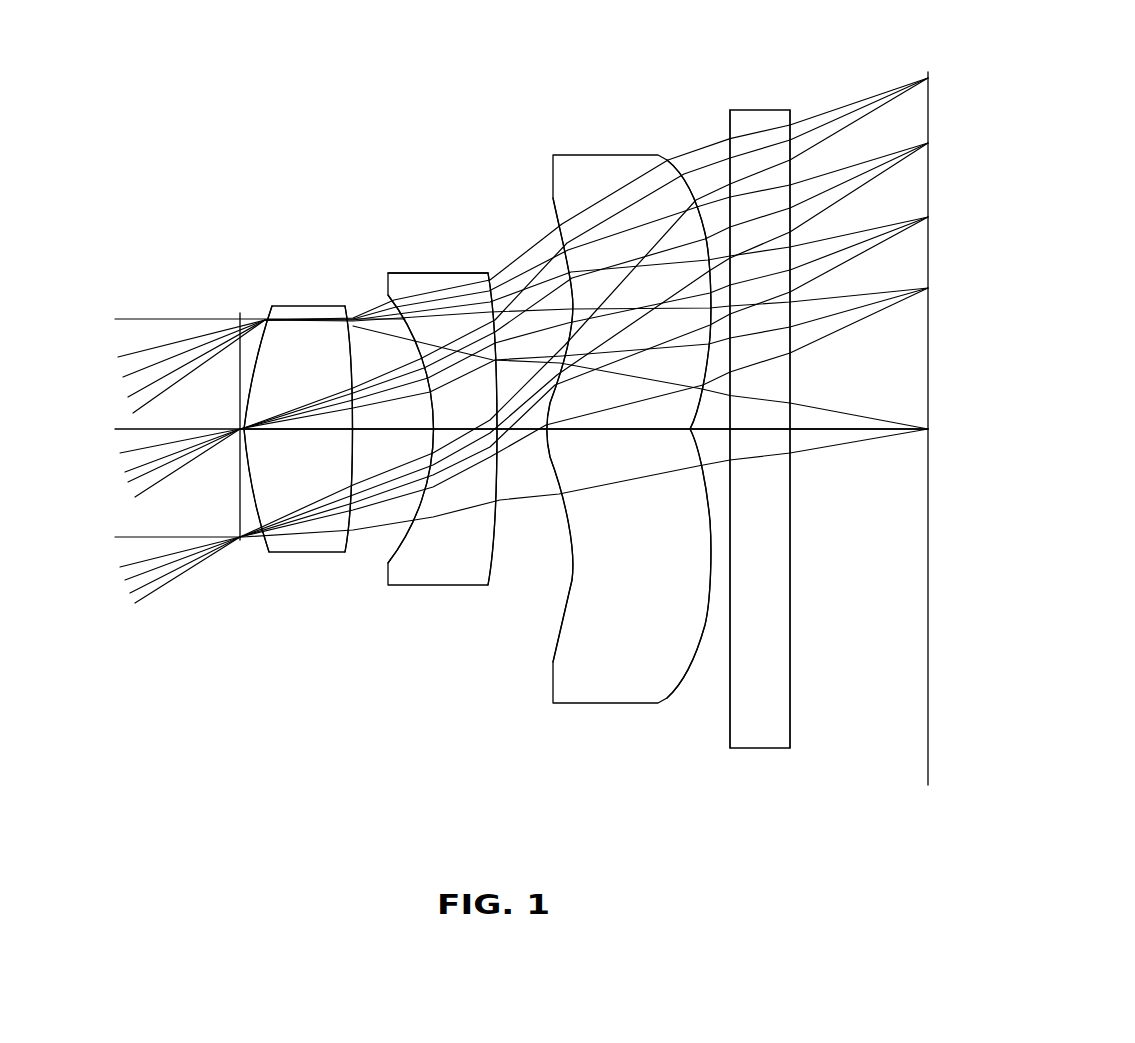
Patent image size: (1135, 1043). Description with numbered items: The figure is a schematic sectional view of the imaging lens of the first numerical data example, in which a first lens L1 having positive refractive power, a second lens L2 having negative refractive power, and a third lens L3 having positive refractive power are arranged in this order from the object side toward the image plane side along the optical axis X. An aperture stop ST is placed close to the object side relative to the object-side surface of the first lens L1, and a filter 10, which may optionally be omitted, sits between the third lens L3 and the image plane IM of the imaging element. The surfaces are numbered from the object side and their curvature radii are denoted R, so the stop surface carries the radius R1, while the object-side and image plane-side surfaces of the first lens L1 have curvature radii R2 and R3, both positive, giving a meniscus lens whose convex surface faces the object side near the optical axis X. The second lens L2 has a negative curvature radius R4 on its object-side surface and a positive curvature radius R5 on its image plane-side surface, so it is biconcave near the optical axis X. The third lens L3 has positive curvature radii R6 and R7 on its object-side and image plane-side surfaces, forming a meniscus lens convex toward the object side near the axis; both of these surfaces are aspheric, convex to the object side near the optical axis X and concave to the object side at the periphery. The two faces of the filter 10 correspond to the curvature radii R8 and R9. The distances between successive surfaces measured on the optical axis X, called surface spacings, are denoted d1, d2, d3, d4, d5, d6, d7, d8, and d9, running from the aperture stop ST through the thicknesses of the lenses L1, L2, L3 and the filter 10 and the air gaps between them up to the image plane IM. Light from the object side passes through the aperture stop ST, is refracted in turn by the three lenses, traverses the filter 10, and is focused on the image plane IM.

The optical axis X is at (128, 428).
The aperture stop ST is at (240, 313).
The first lens L1 is at (296, 312).
The second lens L2 is at (428, 282).
The third lens L3 is at (587, 165).
The curvature radius R1 is at (240, 380).
The curvature radius of object-side surface of first lens R2 is at (257, 342).
The curvature radius of image plane-side surface of first lens R3 is at (357, 333).
The curvature radius of object-side surface of second lens R4 is at (378, 313).
The curvature radius of image plane-side surface of second lens R5 is at (500, 287).
The curvature radius of object-side surface of third lens R6 is at (550, 237).
The curvature radius of image plane-side surface of third lens R7 is at (680, 168).
The curvature radius R8 is at (729, 125).
The curvature radius R9 is at (808, 117).
The filter 10 is at (760, 112).
The image plane IM is at (925, 75).
The surface spacing d1 is at (243, 430).
The surface spacing d2 is at (293, 430).
The surface spacing d3 is at (387, 430).
The surface spacing d4 is at (455, 430).
The surface spacing d5 is at (515, 430).
The surface spacing d6 is at (617, 430).
The surface spacing d7 is at (710, 430).
The surface spacing d8 is at (757, 430).
The surface spacing d9 is at (855, 430).